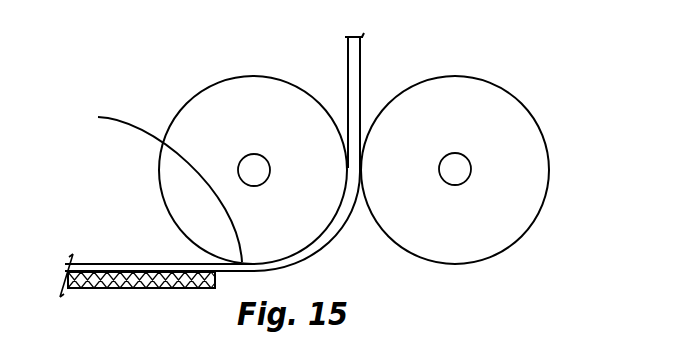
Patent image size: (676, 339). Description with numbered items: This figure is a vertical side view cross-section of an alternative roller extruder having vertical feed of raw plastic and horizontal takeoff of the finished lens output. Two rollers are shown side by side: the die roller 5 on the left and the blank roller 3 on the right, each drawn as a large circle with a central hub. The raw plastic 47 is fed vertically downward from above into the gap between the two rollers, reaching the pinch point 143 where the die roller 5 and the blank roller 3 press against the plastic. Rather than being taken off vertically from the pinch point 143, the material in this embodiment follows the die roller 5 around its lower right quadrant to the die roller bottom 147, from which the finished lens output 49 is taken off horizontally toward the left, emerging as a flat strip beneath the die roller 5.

The die roller 5 is at (225, 78).
The blank roller 3 is at (544, 139).
The raw plastic 47 is at (360, 83).
The pinch point 143 is at (360, 173).
The die roller bottom 147 is at (148, 183).
The finished lens output 49 is at (117, 262).